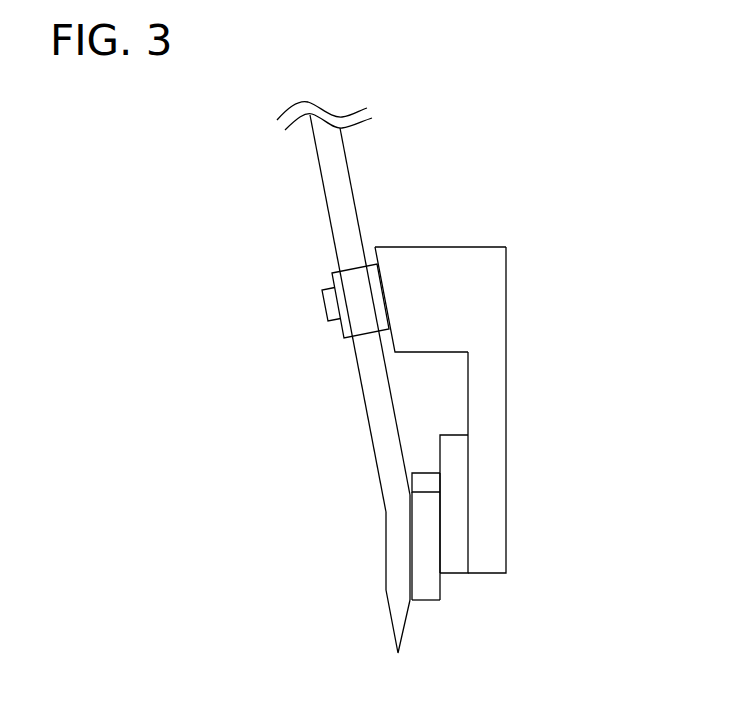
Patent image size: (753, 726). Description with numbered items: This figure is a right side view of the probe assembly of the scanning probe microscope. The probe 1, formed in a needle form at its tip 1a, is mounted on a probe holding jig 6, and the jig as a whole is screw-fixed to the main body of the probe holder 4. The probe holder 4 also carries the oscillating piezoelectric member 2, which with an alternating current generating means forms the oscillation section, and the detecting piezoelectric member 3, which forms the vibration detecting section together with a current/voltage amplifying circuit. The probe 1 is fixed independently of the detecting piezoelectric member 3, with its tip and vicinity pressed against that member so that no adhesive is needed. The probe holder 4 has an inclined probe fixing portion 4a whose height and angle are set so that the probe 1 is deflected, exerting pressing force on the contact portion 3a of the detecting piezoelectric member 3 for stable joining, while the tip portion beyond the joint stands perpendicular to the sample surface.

The probe 1 is at (380, 398).
The tip 1a is at (392, 614).
The oscillating piezoelectric member 2 is at (453, 463).
The detecting piezoelectric member 3 is at (423, 530).
The contact portion 3a is at (413, 557).
The probe holder 4 is at (485, 391).
The probe fixing portion 4a is at (407, 290).
The probe holding jig 6 is at (363, 288).